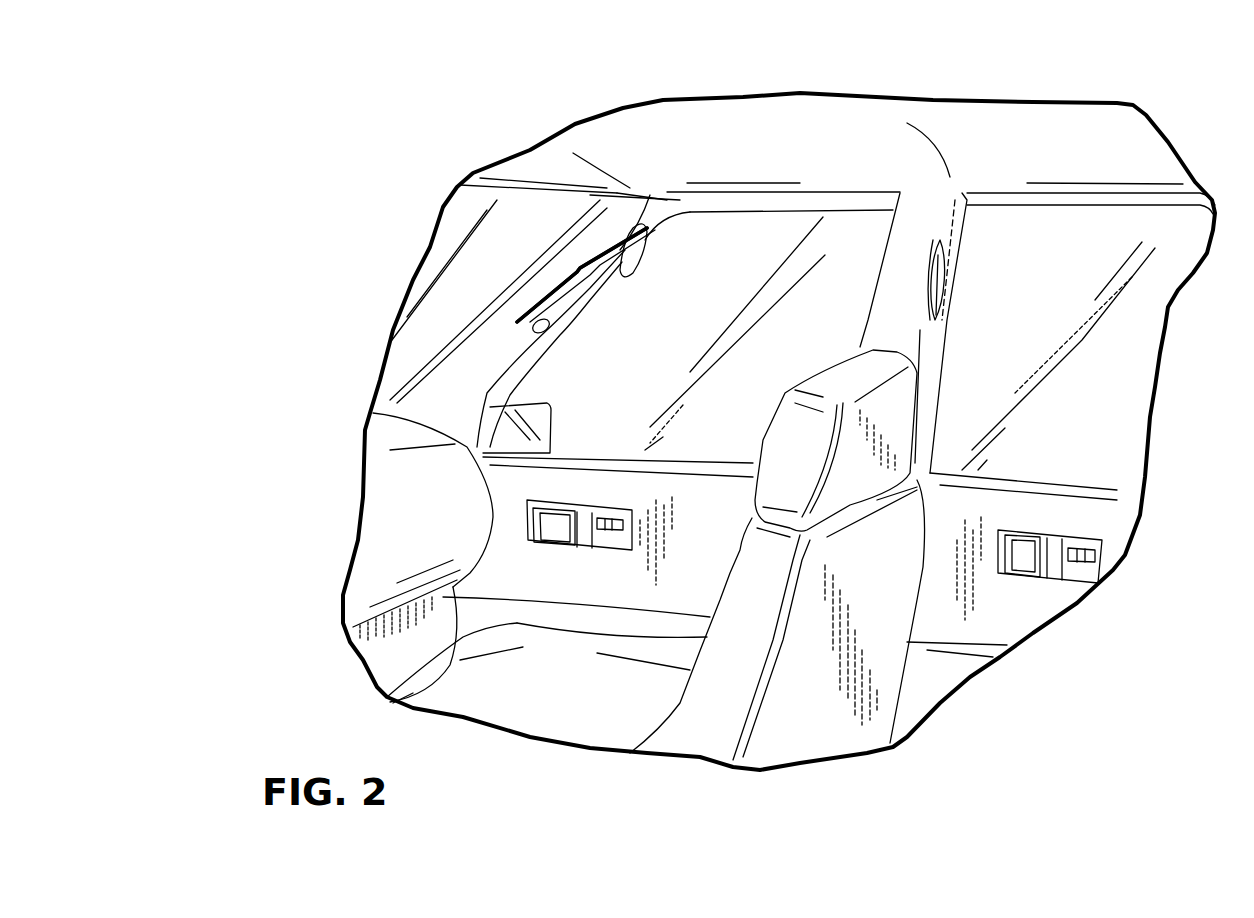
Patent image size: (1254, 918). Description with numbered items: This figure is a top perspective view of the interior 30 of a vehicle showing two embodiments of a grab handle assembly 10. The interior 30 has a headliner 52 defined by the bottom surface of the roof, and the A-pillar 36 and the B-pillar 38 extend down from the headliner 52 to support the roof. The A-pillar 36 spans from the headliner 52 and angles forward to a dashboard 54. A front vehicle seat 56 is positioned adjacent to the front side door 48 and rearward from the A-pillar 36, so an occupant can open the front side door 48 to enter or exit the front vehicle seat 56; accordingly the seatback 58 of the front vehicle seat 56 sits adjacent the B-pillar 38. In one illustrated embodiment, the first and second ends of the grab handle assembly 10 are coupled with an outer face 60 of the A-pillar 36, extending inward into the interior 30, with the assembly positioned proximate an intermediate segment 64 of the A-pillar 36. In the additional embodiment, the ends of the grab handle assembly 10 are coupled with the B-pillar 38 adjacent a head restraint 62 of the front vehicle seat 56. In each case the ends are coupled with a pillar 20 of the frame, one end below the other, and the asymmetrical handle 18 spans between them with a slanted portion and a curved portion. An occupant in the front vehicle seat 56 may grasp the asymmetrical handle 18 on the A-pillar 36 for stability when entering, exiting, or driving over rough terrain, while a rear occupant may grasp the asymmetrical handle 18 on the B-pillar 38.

The grab handle assembly 10 is at (634, 271).
The asymmetrical handle 18 is at (603, 303).
The pillar 20 is at (578, 243).
The A-pillar 36 is at (582, 275).
The interior 30 is at (432, 150).
The B-pillar 38 is at (917, 220).
The front side door 48 is at (533, 587).
The headliner 52 is at (743, 147).
The dashboard 54 is at (387, 440).
The front vehicle seat 56 is at (561, 704).
The seatback 58 is at (703, 703).
The outer face 60 is at (613, 231).
The head restraint 62 is at (852, 488).
The intermediate segment 64 is at (570, 267).